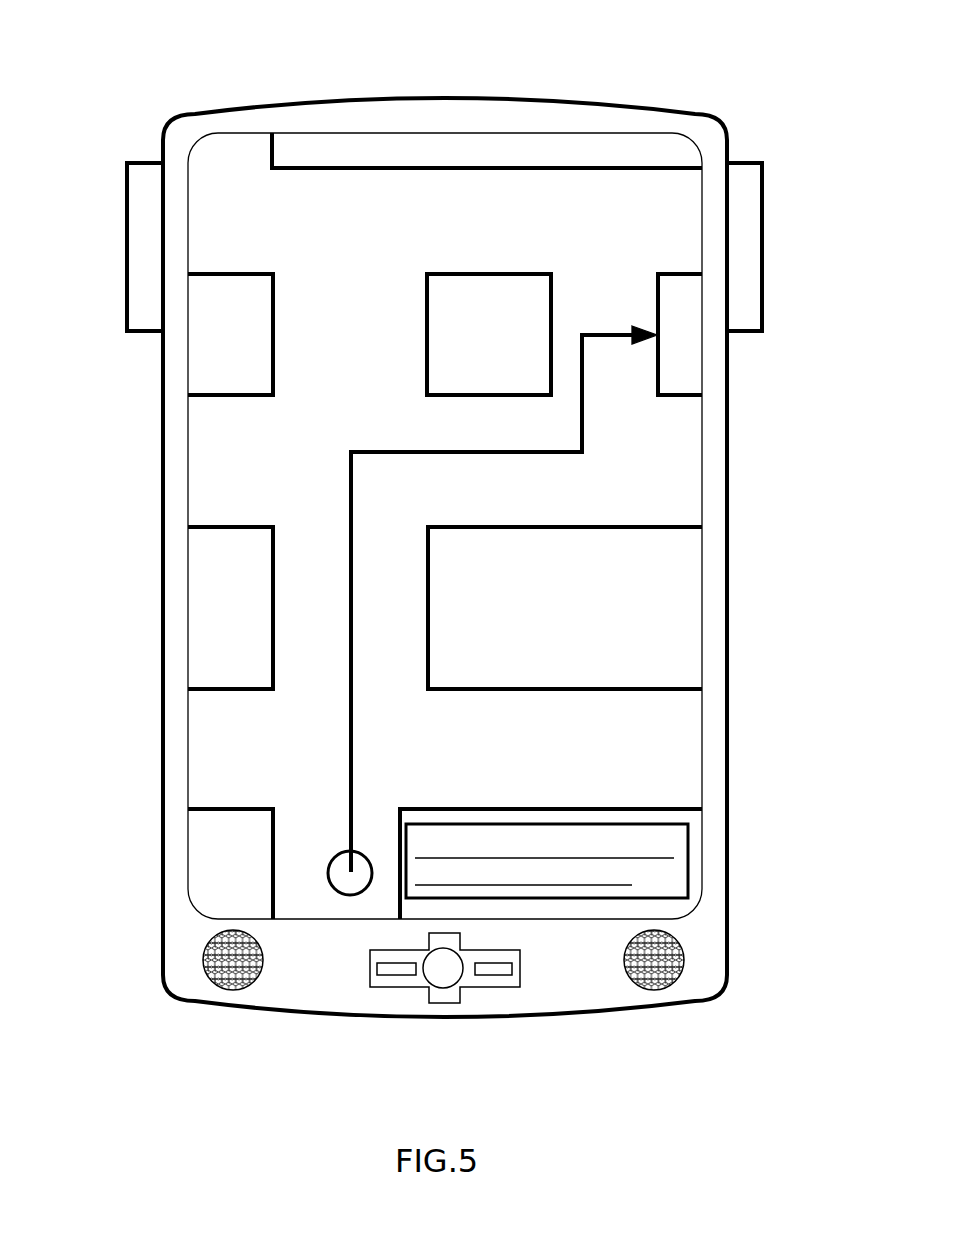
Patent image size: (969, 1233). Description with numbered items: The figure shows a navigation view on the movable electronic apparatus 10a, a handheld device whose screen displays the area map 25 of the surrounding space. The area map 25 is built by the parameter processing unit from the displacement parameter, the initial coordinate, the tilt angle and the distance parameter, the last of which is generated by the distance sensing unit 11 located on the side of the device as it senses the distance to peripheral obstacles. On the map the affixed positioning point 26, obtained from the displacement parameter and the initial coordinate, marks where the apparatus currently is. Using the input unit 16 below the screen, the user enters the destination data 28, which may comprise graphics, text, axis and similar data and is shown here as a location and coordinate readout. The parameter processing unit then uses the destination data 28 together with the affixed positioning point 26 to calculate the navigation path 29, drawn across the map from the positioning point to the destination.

The movable electronic apparatus 10a is at (782, 105).
The distance sensing unit 11 is at (145, 180).
The area map 25 is at (278, 240).
The navigation path 29 is at (348, 506).
The affixed positioning point 26 is at (342, 878).
The destination data 28 is at (642, 838).
The input unit 16 is at (507, 980).